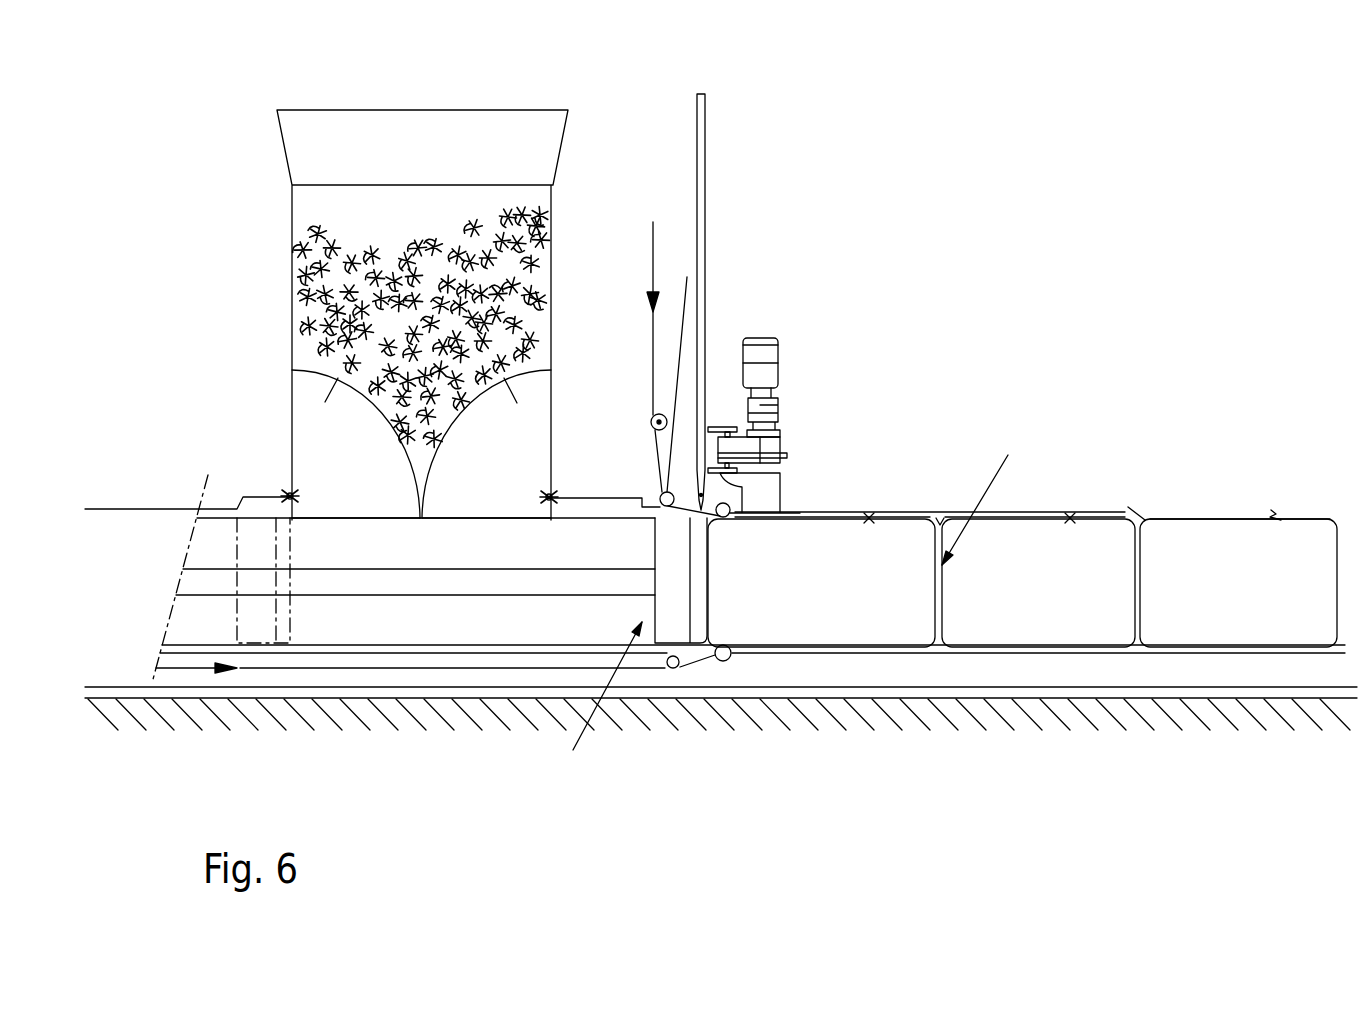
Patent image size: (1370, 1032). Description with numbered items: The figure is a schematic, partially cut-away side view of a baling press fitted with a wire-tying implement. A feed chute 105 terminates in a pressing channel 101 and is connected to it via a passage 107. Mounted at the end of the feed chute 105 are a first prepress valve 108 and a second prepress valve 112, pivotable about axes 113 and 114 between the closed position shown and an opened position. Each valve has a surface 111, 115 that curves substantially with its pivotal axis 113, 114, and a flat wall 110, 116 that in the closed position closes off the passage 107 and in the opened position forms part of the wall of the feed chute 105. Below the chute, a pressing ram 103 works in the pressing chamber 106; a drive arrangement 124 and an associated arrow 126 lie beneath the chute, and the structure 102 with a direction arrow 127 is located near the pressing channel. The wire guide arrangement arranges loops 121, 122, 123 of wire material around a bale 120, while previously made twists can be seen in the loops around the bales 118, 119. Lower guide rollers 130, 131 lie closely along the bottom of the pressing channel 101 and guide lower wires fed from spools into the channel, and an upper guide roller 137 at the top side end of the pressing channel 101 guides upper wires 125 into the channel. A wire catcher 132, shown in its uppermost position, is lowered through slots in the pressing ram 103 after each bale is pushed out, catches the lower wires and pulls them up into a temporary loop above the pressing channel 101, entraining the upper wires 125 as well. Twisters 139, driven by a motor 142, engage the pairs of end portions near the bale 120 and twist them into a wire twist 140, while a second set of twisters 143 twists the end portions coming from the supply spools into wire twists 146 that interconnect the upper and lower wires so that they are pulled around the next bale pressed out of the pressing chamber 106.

The pressing channel 101 is at (930, 494).
The conveying device 102 is at (629, 651).
The pressing ram 103 is at (358, 595).
The feed chute 105 is at (483, 197).
The pressing chamber 106 is at (444, 636).
The passage 107 is at (323, 497).
The first prepress valve 108 is at (382, 466).
The flat wall 110 is at (359, 518).
The surface 111 is at (325, 402).
The second prepress valve 112 is at (509, 466).
The pivotal axis 113 is at (287, 494).
The pivotal axis 114 is at (552, 494).
The surface 115 is at (517, 405).
The flat wall 116 is at (486, 518).
The bale 118 is at (1259, 598).
The bale 119 is at (1060, 598).
The bale 120 is at (820, 598).
The loop 121 is at (1220, 519).
The loop 122 is at (1108, 517).
The loop 123 is at (908, 513).
The lower wire 124 is at (267, 653).
The upper wire 125 is at (653, 351).
The conveying direction 126 is at (189, 668).
The pulling wire 127 is at (653, 248).
The lower guide roller 130 is at (671, 668).
The lower guide roller 131 is at (725, 661).
The wire catcher 132 is at (705, 106).
The upper guide roller 137 is at (687, 277).
The twister 139 is at (737, 485).
The wire twist 140 is at (940, 517).
The drive motor 142 is at (780, 352).
The twister 143 is at (713, 427).
The wire twist 146 is at (869, 517).